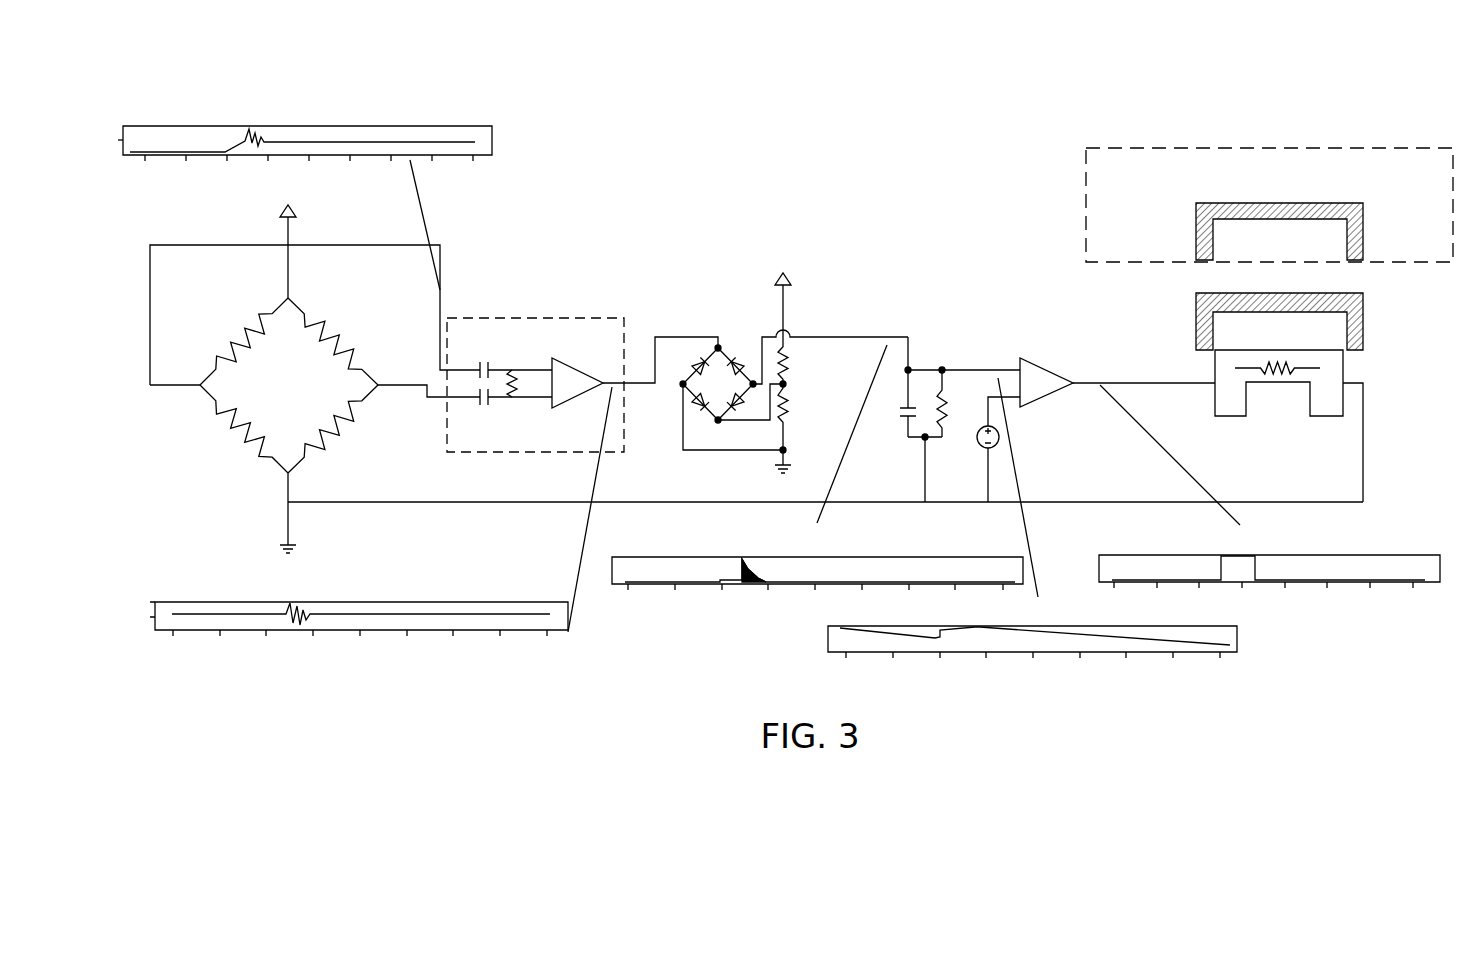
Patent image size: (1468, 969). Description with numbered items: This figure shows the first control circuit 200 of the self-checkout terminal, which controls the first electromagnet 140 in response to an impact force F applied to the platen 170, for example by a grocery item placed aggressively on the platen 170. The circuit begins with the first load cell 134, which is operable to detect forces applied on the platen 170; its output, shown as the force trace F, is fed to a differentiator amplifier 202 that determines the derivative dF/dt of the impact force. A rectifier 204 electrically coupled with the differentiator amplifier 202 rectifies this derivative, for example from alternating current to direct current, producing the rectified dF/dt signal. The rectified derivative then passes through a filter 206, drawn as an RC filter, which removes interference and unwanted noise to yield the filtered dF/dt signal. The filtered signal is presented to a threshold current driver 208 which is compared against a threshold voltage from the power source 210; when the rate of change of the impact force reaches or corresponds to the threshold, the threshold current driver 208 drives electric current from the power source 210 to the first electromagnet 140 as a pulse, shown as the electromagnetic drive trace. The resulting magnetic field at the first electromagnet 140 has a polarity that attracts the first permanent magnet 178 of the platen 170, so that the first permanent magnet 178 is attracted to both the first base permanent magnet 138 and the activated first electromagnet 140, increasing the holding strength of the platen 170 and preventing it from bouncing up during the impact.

The first control circuit 200 is at (879, 123).
The first load cell 134 is at (342, 311).
The differentiator amplifier 202 is at (538, 318).
The rectifier 204 is at (731, 327).
The filter 206 is at (927, 357).
The threshold current driver 208 is at (1066, 370).
The power source 210 is at (1000, 445).
The platen 170 is at (1086, 205).
The first permanent magnet 178 is at (1363, 228).
The first base permanent magnet 138 is at (1363, 313).
The first electromagnet 140 is at (1343, 364).